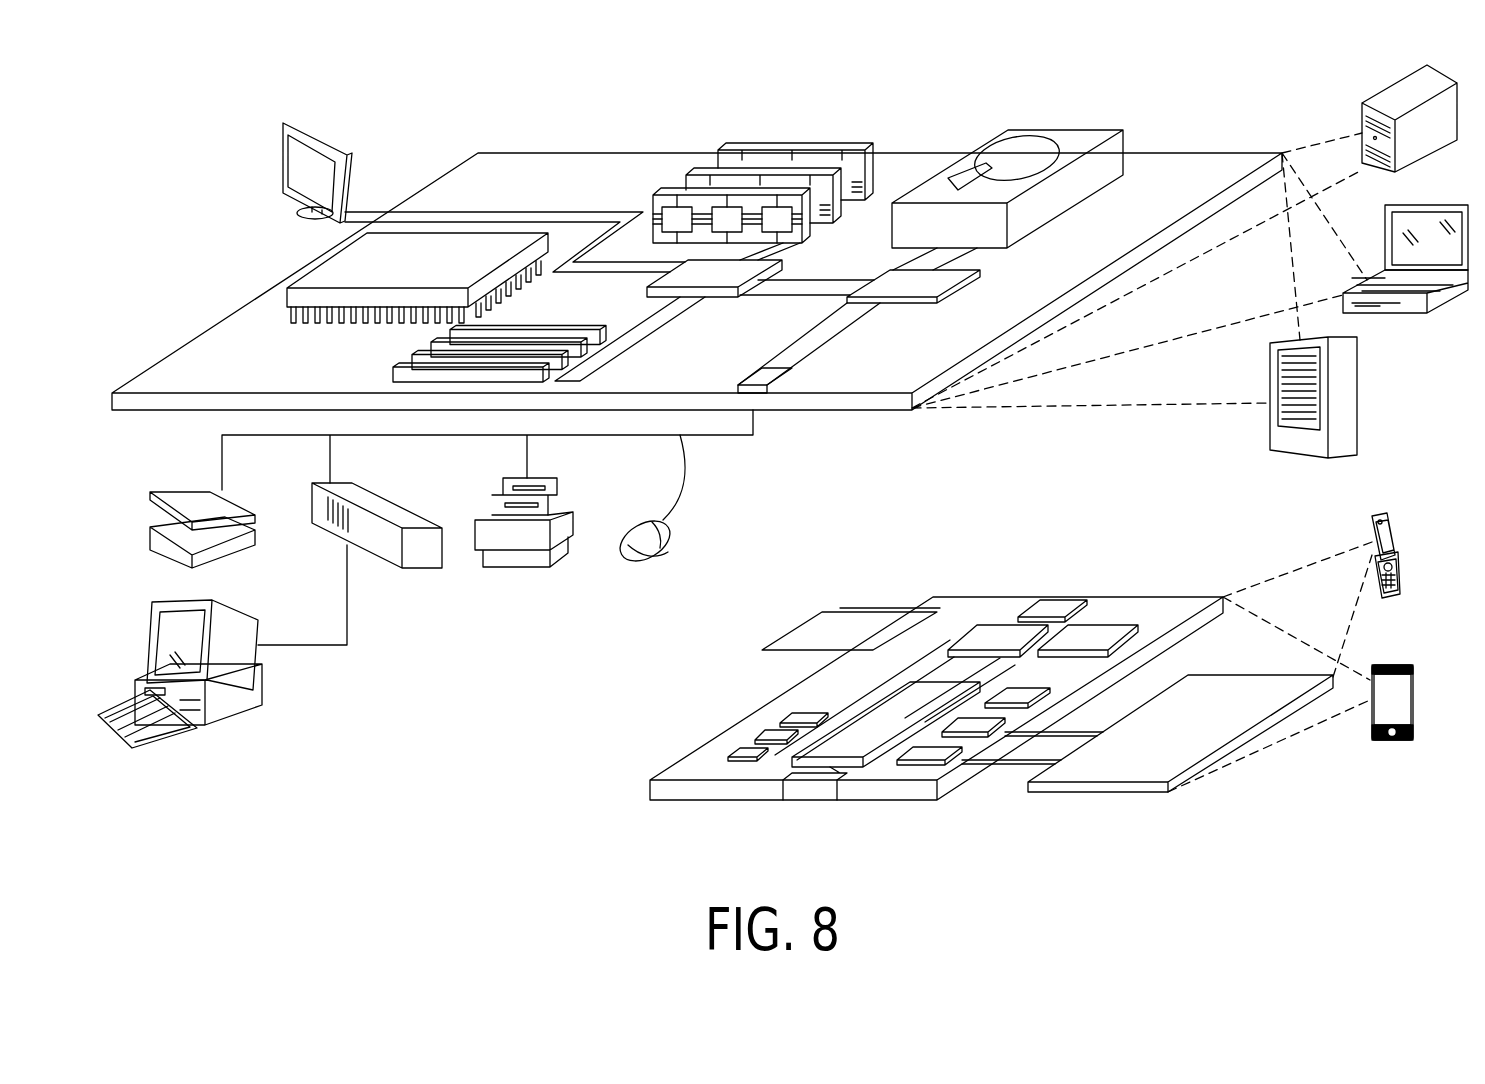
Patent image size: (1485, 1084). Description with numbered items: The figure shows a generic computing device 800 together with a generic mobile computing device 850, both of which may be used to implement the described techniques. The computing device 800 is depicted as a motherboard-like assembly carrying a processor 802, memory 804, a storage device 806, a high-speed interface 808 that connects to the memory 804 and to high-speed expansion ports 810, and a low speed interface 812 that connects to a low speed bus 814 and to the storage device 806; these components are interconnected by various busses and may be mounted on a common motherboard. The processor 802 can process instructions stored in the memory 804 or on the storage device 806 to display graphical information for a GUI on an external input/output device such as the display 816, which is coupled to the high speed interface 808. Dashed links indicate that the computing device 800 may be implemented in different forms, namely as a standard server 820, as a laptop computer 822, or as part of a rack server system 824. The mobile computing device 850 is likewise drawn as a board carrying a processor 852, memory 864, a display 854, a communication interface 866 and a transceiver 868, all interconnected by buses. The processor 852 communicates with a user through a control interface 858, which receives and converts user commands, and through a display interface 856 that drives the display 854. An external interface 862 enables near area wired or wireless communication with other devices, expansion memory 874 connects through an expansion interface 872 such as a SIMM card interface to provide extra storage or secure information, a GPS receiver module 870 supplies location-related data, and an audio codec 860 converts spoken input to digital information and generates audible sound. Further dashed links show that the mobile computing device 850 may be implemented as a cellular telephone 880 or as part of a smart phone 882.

The computing device 800 is at (426, 96).
The processor 802 is at (313, 266).
The memory 804 is at (800, 148).
The storage device 806 is at (1052, 128).
The high-speed interface 808 is at (728, 270).
The high-speed expansion ports 810 is at (420, 352).
The low speed interface 812 is at (883, 280).
The low speed bus 814 is at (760, 378).
The display 816 is at (290, 120).
The standard server 820 is at (1385, 97).
The laptop computer 822 is at (1445, 207).
The rack server system 824 is at (1357, 395).
The mobile computing device 850 is at (600, 810).
The processor 852 is at (856, 732).
The display 854 is at (1222, 693).
The display interface 856 is at (940, 753).
The control interface 858 is at (977, 726).
The audio codec 860 is at (1021, 693).
The external interface 862 is at (810, 785).
The memory 864 is at (758, 737).
The communication interface 866 is at (997, 633).
The transceiver 868 is at (1097, 634).
The GPS receiver module 870 is at (1053, 610).
The expansion interface 872 is at (916, 608).
The expansion memory 874 is at (822, 611).
The cellular telephone 880 is at (1380, 515).
The smart phone 882 is at (1383, 668).